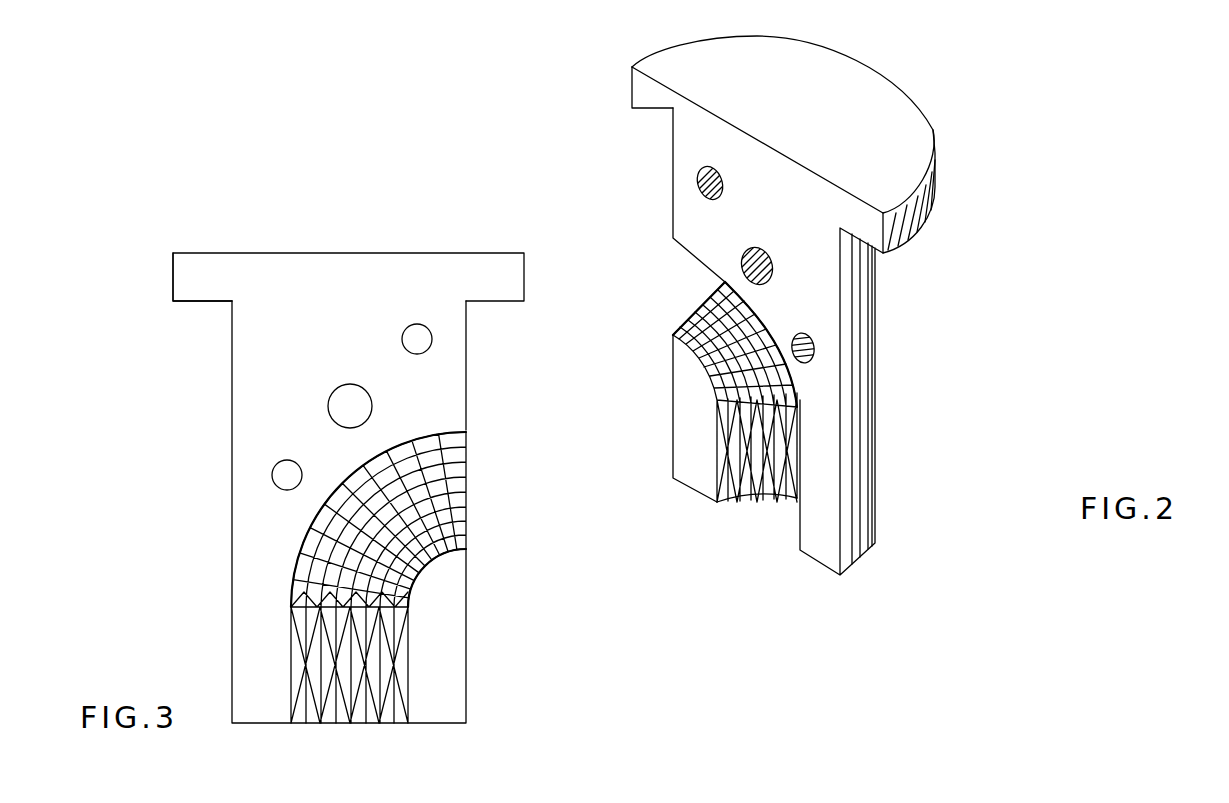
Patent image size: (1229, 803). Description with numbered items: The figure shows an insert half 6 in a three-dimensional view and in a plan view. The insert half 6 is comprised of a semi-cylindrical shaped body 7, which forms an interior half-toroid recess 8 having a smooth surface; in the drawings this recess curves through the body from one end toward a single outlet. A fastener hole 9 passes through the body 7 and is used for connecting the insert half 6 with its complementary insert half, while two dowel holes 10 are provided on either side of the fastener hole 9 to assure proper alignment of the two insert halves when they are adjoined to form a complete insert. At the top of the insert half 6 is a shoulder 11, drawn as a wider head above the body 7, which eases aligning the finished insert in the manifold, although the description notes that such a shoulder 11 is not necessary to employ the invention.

In FIG. 3, the insert half 6 is at (333, 263).
In FIG. 2, the insert half 6 is at (872, 130).
In FIG. 3, the semi-cylindrical shaped body 7 is at (455, 398).
In FIG. 2, the semi-cylindrical shaped body 7 is at (872, 424).
In FIG. 3, the interior half-toroid recess 8 is at (455, 465).
In FIG. 2, the interior half-toroid recess 8 is at (747, 495).
In FIG. 3, the fastener hole 9 is at (328, 394).
In FIG. 2, the fastener hole 9 is at (748, 250).
In FIG. 3, the dowel holes 10 is at (275, 462).
In FIG. 2, the dowel holes 10 is at (700, 176).
In FIG. 3, the shoulder 11 is at (195, 287).
In FIG. 2, the shoulder 11 is at (632, 85).